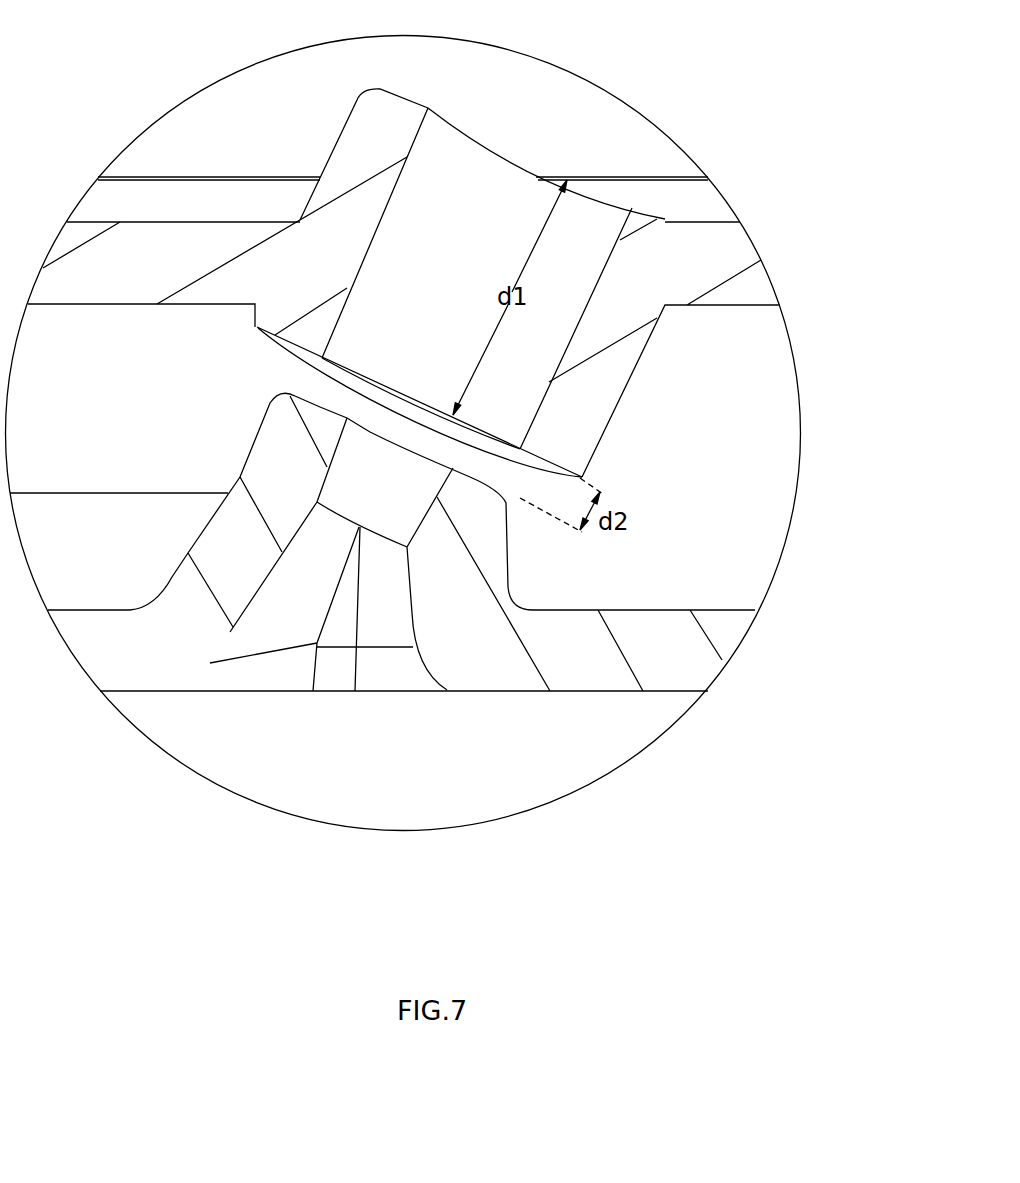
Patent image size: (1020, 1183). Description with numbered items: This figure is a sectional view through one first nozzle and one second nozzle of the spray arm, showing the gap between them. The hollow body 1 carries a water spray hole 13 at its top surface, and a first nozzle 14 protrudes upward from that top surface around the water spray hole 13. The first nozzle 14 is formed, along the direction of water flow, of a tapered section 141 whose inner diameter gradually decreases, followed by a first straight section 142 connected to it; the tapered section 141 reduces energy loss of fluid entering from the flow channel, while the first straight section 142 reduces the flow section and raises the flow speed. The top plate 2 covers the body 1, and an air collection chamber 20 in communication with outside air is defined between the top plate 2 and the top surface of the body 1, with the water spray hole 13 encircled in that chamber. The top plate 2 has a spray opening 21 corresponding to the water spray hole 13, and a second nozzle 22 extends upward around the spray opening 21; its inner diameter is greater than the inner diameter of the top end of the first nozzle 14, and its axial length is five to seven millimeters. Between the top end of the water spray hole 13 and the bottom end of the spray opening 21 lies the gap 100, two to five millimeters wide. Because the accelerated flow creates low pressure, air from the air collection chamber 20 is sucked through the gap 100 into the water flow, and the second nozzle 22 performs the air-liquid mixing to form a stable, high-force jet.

The body 1 is at (673, 660).
The top plate 2 is at (712, 212).
The water spray hole 13 is at (319, 691).
The first nozzle 14 is at (238, 497).
The air collection chamber 20 is at (765, 447).
The spray opening 21 is at (472, 207).
The second nozzle 22 is at (375, 145).
The gap 100 is at (315, 389).
The tapered section 141 is at (382, 612).
The first straight section 142 is at (350, 467).